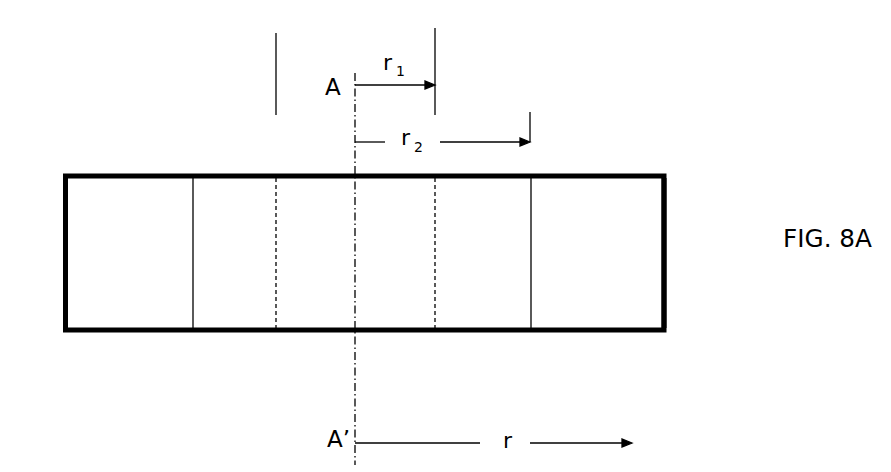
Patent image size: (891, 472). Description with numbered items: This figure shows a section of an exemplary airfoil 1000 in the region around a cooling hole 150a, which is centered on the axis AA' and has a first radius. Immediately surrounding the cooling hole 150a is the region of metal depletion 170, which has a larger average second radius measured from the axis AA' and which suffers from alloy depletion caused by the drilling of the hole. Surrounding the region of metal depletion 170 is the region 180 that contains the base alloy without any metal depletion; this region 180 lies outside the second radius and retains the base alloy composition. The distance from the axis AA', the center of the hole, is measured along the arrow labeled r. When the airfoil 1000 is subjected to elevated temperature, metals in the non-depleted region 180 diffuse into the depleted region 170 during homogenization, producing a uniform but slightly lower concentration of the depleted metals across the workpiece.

The airfoil 1000 is at (420, 180).
The cooling hole 150a is at (437, 296).
The region of metal depletion 170 is at (534, 294).
The region containing the base alloy 180 is at (644, 291).